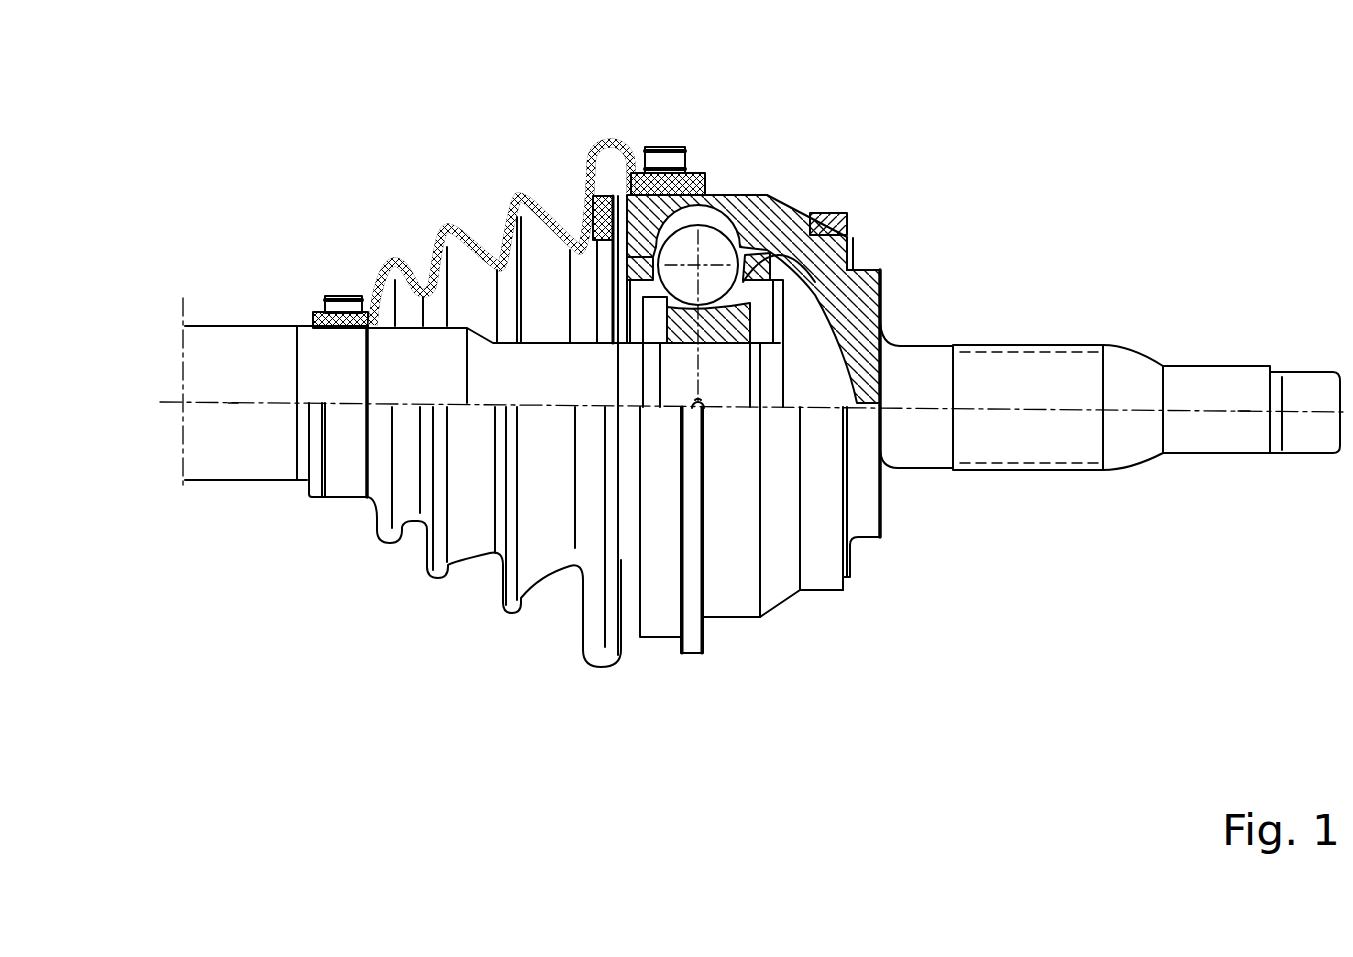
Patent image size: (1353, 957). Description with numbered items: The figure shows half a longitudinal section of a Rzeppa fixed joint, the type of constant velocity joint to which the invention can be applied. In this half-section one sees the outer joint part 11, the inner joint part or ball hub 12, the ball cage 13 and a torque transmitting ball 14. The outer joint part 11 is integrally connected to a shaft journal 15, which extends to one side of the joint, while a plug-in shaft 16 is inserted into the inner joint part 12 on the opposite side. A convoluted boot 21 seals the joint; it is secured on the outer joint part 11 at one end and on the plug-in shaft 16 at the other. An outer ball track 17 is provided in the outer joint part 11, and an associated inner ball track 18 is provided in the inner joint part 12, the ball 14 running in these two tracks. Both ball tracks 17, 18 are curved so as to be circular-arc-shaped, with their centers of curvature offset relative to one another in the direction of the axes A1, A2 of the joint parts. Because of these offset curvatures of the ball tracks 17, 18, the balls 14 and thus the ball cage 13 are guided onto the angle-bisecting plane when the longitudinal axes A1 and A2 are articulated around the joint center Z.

The outer joint part 11 is at (737, 207).
The inner joint part 12 is at (800, 213).
The ball cage 13 is at (747, 252).
The torque transmitting ball 14 is at (691, 252).
The shaft journal 15 is at (918, 365).
The plug-in shaft 16 is at (273, 338).
The outer ball track 17 is at (645, 172).
The inner ball track 18 is at (667, 180).
The convoluted boot 21 is at (472, 235).
The joint center Z is at (693, 410).
The longitudinal axis of joint part A1 is at (232, 405).
The longitudinal axis of joint part A2 is at (1243, 415).